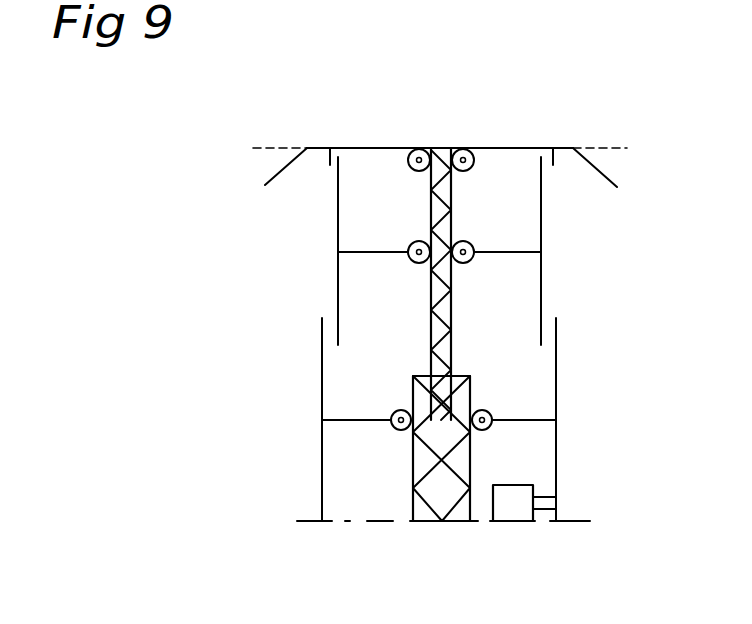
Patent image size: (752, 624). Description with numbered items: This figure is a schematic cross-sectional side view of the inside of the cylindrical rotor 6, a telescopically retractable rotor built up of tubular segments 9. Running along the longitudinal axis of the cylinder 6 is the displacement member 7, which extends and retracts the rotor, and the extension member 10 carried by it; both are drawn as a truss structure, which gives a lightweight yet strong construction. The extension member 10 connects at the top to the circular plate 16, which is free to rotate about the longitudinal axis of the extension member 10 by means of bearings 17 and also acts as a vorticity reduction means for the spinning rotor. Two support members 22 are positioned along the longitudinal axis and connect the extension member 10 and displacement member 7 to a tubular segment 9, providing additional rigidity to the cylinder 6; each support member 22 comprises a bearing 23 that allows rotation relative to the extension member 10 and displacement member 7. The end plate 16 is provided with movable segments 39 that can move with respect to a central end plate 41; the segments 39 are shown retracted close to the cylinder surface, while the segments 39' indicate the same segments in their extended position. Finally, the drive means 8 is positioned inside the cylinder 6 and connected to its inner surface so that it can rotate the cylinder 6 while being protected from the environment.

The cylindrical rotor 6 is at (565, 100).
The displacement member 7 is at (443, 467).
The drive means 8 is at (510, 520).
The tubular segment 9 is at (322, 383).
The extension member 10 is at (453, 211).
The circular plate 16 is at (386, 130).
The bearings 17 is at (466, 148).
The support member 22 is at (357, 422).
The bearing 23 is at (482, 413).
The movable segments 39 is at (441, 175).
The segments in extended position 39' is at (440, 128).
The central end plate 41 is at (399, 148).